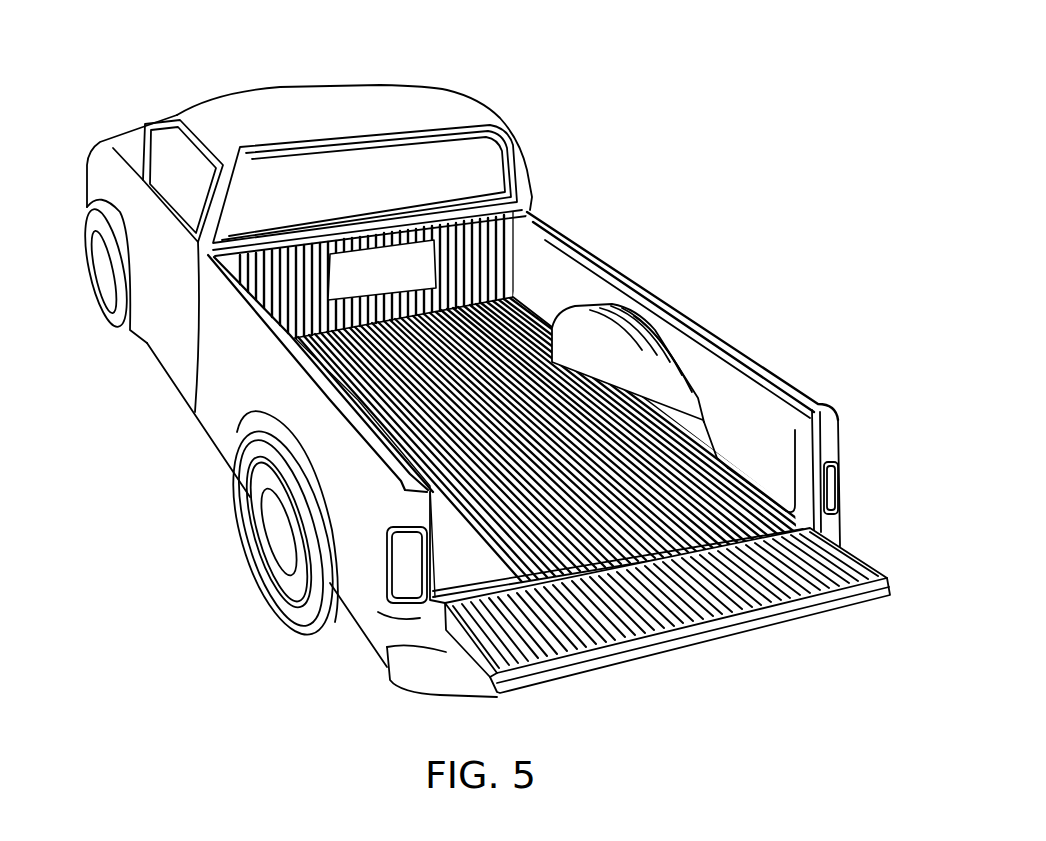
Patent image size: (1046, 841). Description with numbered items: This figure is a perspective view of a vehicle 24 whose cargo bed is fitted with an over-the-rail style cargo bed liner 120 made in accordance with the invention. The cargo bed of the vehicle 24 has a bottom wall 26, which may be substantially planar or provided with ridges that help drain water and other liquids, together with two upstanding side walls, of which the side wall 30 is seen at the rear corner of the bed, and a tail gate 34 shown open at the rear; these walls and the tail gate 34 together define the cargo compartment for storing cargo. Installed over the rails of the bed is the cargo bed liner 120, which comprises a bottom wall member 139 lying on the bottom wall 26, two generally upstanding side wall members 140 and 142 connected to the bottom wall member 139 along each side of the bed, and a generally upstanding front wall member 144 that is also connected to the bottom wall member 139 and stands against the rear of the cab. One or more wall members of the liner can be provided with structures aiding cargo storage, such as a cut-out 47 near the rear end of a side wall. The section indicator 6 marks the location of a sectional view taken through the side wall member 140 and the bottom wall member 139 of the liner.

The vehicle 24 is at (205, 80).
The bottom wall 26 is at (205, 413).
The side wall 30 is at (846, 432).
The tail gate 34 is at (692, 628).
The cut-out 47 is at (779, 400).
The cargo bed liner 120 is at (580, 253).
The bottom wall member 139 is at (572, 557).
The side wall member 140 is at (408, 444).
The side wall member 142 is at (770, 387).
The front wall member 144 is at (522, 214).
The section line for FIG. 6 is at (330, 428).